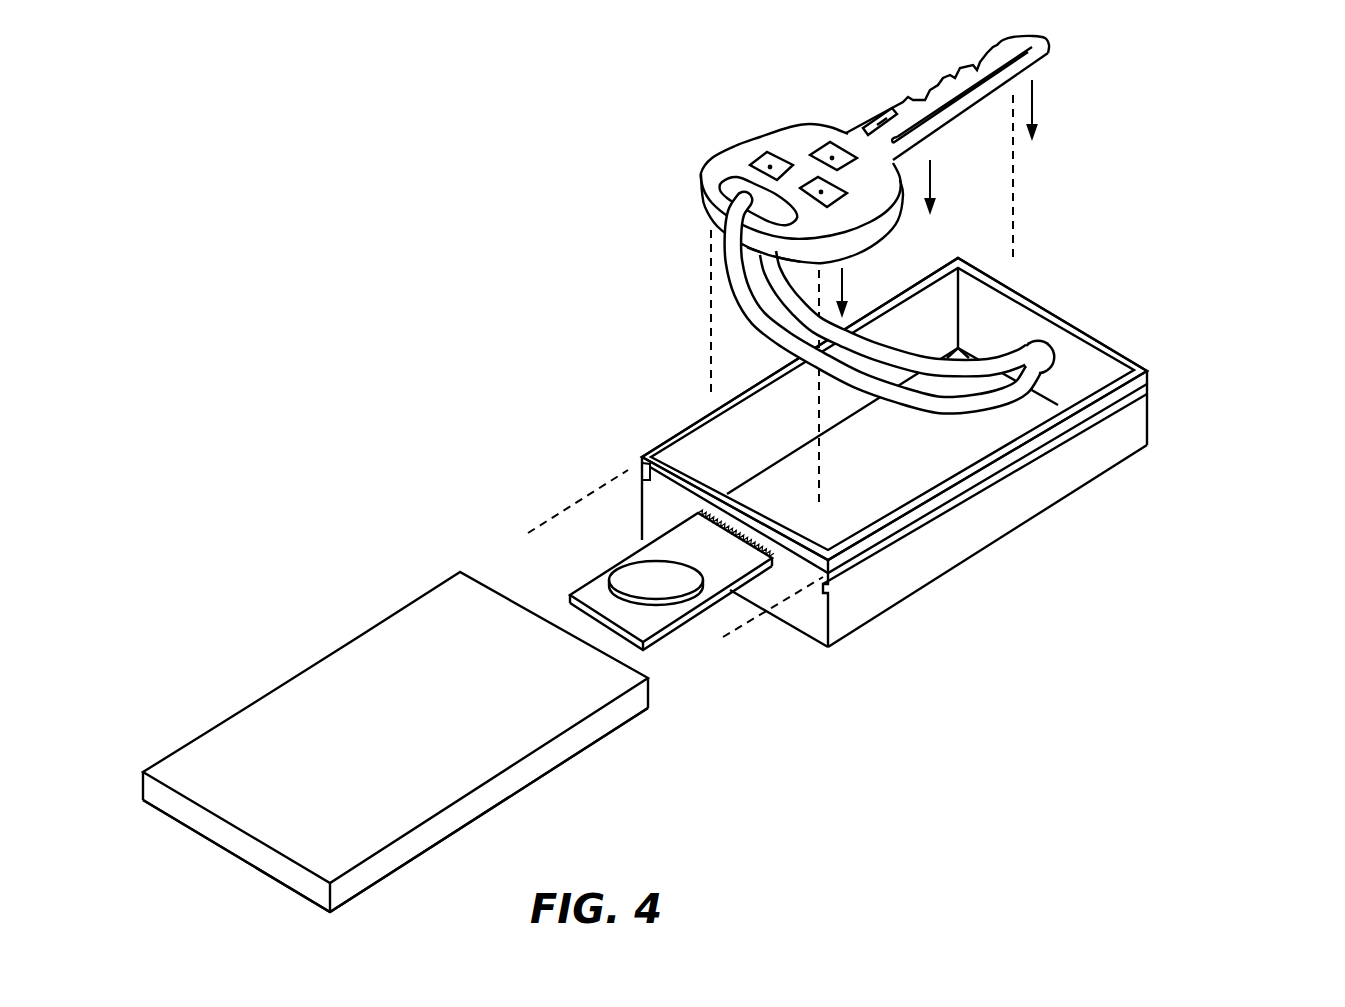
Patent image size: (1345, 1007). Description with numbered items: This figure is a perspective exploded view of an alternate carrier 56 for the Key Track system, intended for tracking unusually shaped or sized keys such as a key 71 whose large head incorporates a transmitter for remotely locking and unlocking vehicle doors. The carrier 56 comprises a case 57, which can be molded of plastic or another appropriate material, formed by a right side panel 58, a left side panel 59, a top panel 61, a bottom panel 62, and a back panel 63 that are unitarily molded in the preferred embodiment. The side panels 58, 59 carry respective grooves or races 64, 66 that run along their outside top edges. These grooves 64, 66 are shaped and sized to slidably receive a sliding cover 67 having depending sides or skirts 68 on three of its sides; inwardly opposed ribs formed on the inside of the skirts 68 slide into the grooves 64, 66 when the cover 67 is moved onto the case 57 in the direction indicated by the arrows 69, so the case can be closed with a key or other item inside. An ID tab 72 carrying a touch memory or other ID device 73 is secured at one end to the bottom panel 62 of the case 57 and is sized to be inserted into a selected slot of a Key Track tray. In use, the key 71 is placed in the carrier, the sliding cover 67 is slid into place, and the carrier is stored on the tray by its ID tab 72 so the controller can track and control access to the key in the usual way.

The carrier 56 is at (800, 722).
The case 57 is at (1178, 417).
The right side panel 58 is at (1017, 503).
The left side panel 59 is at (732, 437).
The top panel 61 is at (1092, 376).
The bottom panel 62 is at (808, 620).
The back panel 63 is at (1000, 423).
The groove 64 is at (908, 540).
The groove 66 is at (634, 468).
The sliding cover 67 is at (262, 660).
The side skirts 68 is at (588, 712).
The arrows 69 is at (518, 538).
The key 71 is at (736, 96).
The ID tab 72 is at (590, 596).
The ID device 73 is at (664, 578).